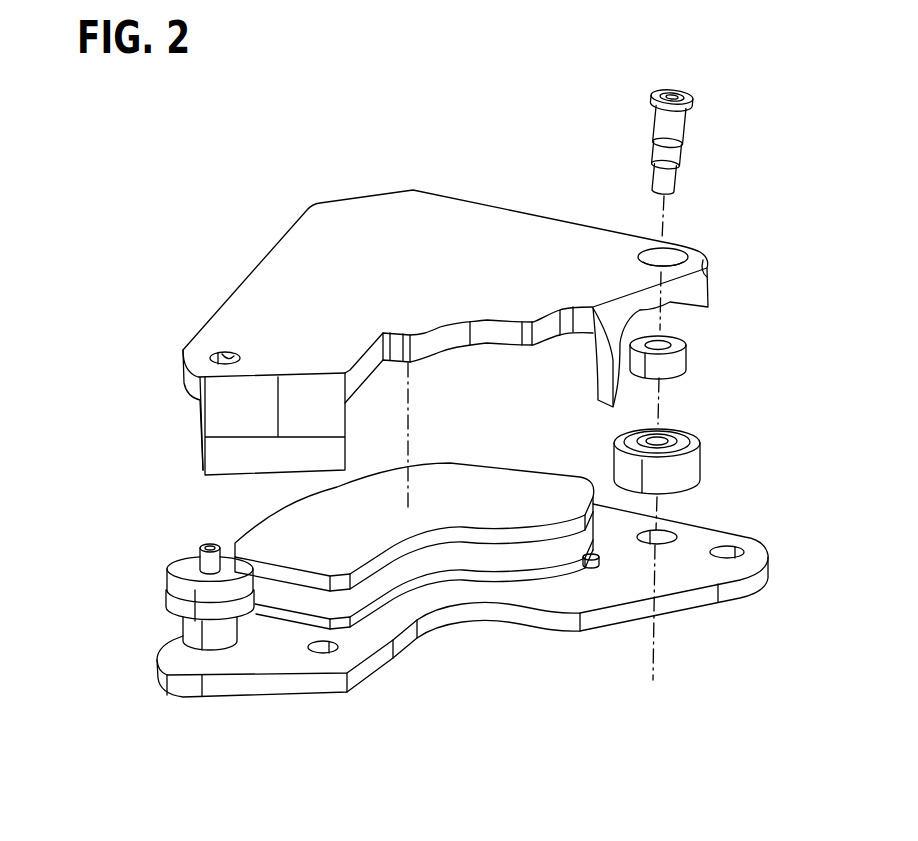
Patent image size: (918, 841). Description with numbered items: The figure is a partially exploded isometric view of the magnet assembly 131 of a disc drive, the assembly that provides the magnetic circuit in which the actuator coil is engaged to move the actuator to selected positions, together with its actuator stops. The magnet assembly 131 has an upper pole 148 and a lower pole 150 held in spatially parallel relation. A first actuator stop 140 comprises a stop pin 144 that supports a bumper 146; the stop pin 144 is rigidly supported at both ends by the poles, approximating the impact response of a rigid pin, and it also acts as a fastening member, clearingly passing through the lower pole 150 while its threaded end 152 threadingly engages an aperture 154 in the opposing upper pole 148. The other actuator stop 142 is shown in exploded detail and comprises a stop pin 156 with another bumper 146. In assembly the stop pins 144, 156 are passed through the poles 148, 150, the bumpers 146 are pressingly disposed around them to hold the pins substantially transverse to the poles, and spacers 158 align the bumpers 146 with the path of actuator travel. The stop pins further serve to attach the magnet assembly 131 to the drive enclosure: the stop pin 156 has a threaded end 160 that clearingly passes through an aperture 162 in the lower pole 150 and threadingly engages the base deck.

The magnet assembly 131 is at (373, 162).
The actuator stop 142 is at (608, 148).
The upper pole 148 is at (250, 272).
The aperture 154 is at (218, 350).
The stop pin 156 is at (673, 88).
The threaded end 160 is at (672, 180).
The spacer 158 is at (690, 352).
The bumper 146 is at (700, 462).
The actuator stop 140 is at (170, 526).
The lower pole 150 is at (258, 700).
The aperture 162 is at (652, 545).
The stop pin 144 is at (198, 547).
The threaded end 152 is at (213, 545).